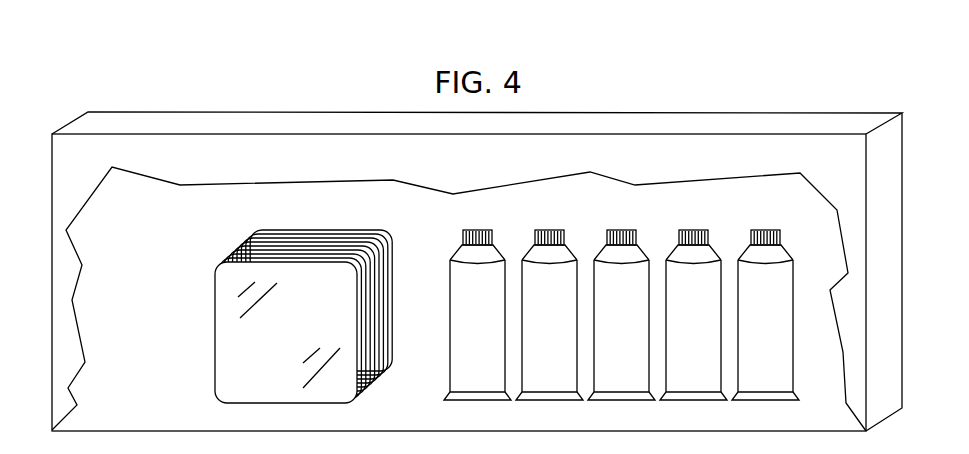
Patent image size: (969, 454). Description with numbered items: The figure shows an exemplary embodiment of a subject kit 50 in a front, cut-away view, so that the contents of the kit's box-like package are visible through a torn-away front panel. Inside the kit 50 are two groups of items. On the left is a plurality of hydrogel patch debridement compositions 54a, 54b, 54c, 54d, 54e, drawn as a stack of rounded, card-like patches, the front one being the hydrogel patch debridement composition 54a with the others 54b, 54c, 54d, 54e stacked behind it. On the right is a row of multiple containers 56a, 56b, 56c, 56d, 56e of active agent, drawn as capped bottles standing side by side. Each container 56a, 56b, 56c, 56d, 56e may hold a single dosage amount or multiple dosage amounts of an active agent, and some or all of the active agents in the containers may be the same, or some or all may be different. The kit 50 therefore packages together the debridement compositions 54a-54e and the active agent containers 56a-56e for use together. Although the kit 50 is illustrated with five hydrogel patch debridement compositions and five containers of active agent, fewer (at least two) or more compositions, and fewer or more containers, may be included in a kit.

The kit 50 is at (118, 93).
The hydrogel patch debridement composition 54a is at (310, 333).
The hydrogel patch debridement composition 54b is at (244, 246).
The hydrogel patch debridement composition 54c is at (253, 242).
The hydrogel patch debridement composition 54d is at (266, 234).
The hydrogel patch debridement composition 54e is at (280, 230).
The container of active agent 56a is at (478, 230).
The container of active agent 56b is at (550, 230).
The container of active agent 56c is at (622, 230).
The container of active agent 56d is at (694, 230).
The container of active agent 56e is at (766, 230).